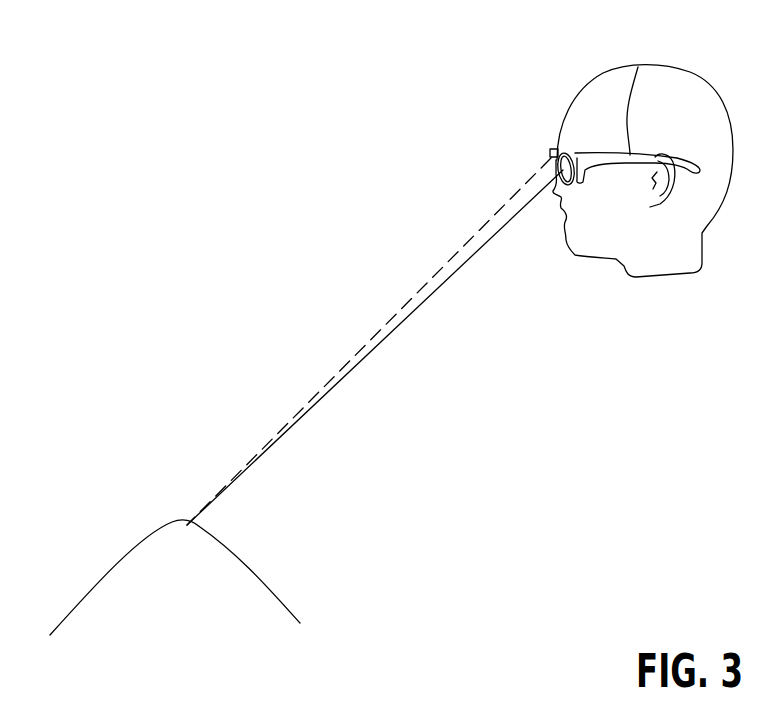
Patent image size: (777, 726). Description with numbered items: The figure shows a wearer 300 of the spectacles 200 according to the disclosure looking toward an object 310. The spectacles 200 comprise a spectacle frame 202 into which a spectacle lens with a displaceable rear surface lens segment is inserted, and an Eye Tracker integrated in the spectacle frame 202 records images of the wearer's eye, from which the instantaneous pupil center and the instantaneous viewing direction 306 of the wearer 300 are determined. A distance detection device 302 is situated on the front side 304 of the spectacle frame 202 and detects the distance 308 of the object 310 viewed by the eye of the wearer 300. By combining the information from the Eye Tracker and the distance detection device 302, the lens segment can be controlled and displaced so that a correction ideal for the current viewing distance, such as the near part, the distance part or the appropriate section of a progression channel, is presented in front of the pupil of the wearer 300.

The spectacles 200 is at (638, 67).
The spectacle frame 202 is at (577, 183).
The wearer of the spectacles 300 is at (654, 314).
The distance detection device 302 is at (553, 149).
The front side of the spectacle frame 304 is at (535, 143).
The viewing direction 306 is at (418, 313).
The distance 308 is at (427, 283).
The object 310 is at (128, 540).